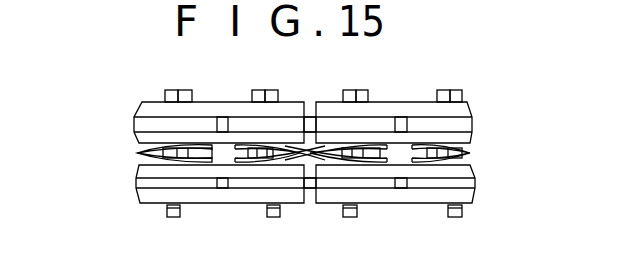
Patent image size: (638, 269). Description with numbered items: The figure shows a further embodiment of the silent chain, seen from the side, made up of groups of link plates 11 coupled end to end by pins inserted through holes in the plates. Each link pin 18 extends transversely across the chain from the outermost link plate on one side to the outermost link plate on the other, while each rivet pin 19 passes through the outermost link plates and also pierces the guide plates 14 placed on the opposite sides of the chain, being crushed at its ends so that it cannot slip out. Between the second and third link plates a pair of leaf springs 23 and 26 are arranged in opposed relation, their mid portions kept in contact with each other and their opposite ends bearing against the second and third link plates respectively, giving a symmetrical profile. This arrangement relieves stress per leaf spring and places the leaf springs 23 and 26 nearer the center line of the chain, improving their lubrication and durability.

The link plates 11 is at (158, 169).
The guide plates 14 is at (226, 198).
The link pin 18 is at (188, 94).
The rivet pin 19 is at (168, 90).
The leaf spring 23 is at (290, 196).
The leaf spring 26 is at (291, 175).